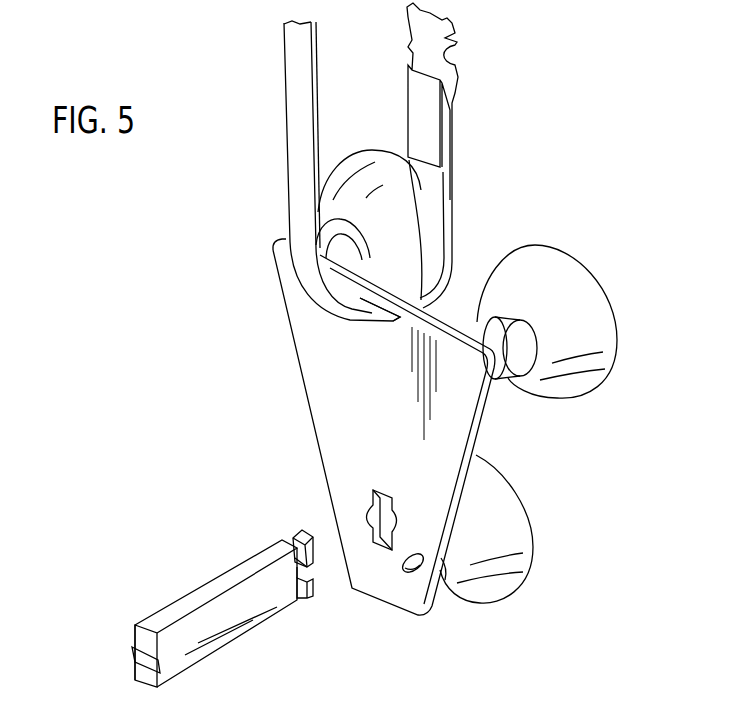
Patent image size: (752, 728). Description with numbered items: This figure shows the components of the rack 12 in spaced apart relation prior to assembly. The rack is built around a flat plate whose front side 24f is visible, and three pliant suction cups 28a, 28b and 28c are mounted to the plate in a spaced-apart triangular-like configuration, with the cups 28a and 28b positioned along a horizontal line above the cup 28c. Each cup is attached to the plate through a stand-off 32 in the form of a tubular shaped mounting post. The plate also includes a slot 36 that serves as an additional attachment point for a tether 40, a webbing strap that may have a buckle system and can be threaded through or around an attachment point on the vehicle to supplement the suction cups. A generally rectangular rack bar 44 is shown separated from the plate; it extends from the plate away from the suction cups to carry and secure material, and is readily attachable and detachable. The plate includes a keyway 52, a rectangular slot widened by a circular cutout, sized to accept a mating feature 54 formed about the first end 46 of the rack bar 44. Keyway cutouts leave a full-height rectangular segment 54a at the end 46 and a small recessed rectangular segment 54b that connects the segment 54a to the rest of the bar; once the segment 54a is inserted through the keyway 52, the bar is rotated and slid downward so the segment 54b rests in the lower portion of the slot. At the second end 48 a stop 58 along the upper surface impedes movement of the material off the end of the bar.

The rack 12 is at (533, 113).
The front side of plate 24f is at (377, 428).
The suction cup 28a is at (364, 183).
The suction cup 28b is at (558, 308).
The suction cup 28c is at (493, 530).
The stand-off 32 is at (503, 358).
The slot 36 is at (378, 322).
The tether 40 is at (300, 127).
The rack bar 44 is at (228, 588).
The first end 46 is at (300, 530).
The second end 48 is at (143, 635).
The keyway 52 is at (386, 492).
The mating feature 54 is at (310, 597).
The rectangular segment 54a is at (315, 568).
The recessed rectangular segment 54b is at (300, 572).
The stop 58 is at (133, 657).